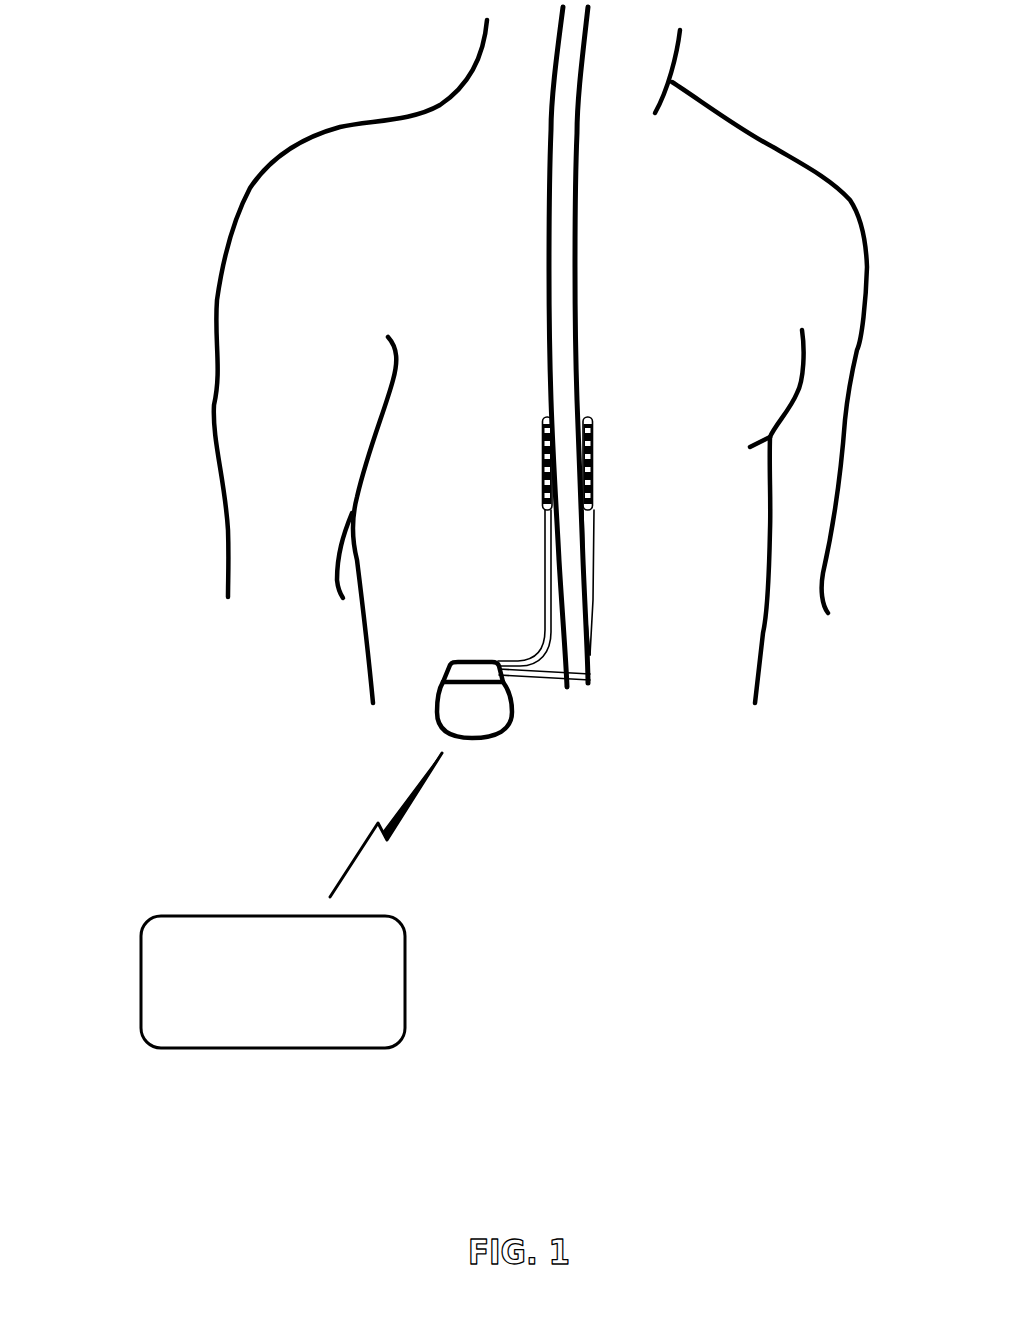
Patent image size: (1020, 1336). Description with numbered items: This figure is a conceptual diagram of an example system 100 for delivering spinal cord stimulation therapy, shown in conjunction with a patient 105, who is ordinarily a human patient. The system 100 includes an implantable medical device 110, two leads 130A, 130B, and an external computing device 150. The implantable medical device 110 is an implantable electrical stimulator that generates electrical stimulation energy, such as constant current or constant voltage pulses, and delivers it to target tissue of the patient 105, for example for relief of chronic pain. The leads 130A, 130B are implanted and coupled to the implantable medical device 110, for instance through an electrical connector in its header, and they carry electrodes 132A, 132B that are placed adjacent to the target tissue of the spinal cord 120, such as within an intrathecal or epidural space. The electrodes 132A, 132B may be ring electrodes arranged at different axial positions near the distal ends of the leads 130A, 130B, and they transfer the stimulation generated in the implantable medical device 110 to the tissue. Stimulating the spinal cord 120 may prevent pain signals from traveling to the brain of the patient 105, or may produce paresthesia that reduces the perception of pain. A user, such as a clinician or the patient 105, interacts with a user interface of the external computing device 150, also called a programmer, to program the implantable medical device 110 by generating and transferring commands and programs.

The system 100 is at (165, 85).
The patient 105 is at (765, 142).
The implantable medical device 110 is at (452, 660).
The spinal cord 120 is at (577, 242).
The lead 130A is at (501, 541).
The lead 130B is at (597, 548).
The electrodes 132A is at (538, 480).
The electrodes 132B is at (597, 480).
The external computing device 150 is at (293, 1037).